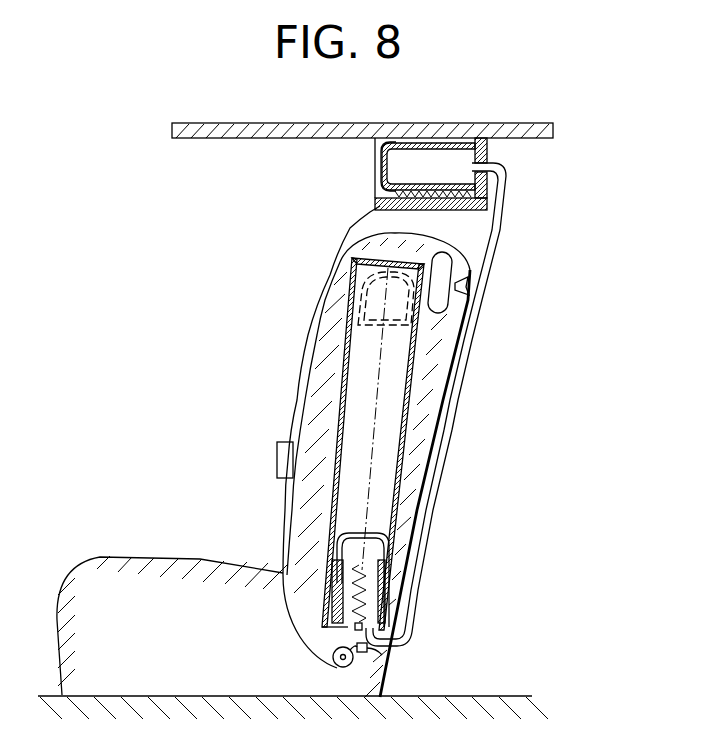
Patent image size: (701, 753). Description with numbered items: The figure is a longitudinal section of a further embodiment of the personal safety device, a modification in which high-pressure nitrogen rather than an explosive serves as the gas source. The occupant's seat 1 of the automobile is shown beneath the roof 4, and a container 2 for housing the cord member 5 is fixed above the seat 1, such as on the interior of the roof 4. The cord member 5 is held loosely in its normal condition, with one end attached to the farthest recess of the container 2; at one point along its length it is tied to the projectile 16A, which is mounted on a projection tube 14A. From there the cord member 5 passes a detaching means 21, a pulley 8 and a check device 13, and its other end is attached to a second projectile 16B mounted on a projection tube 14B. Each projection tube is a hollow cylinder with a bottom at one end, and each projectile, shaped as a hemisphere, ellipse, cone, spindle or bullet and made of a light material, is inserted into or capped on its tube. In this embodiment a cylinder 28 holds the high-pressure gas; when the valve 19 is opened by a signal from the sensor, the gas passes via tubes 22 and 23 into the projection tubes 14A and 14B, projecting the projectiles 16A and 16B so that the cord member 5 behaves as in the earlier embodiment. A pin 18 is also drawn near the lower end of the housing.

The seat 1 is at (326, 338).
The container 2 is at (380, 204).
The roof 4 is at (267, 123).
The cord member 5 is at (340, 246).
The pulley 8 is at (336, 665).
The check device 13 is at (380, 660).
The projection tube 14A is at (437, 147).
The projection tube 14B is at (412, 428).
The projectile 16A is at (382, 159).
The projectile 16B is at (372, 540).
The pin 18 is at (350, 630).
The valve 19 is at (468, 300).
The detaching means 21 is at (277, 458).
The tube 22 is at (505, 185).
The tube 23 is at (446, 488).
The cylinder 28 is at (447, 267).